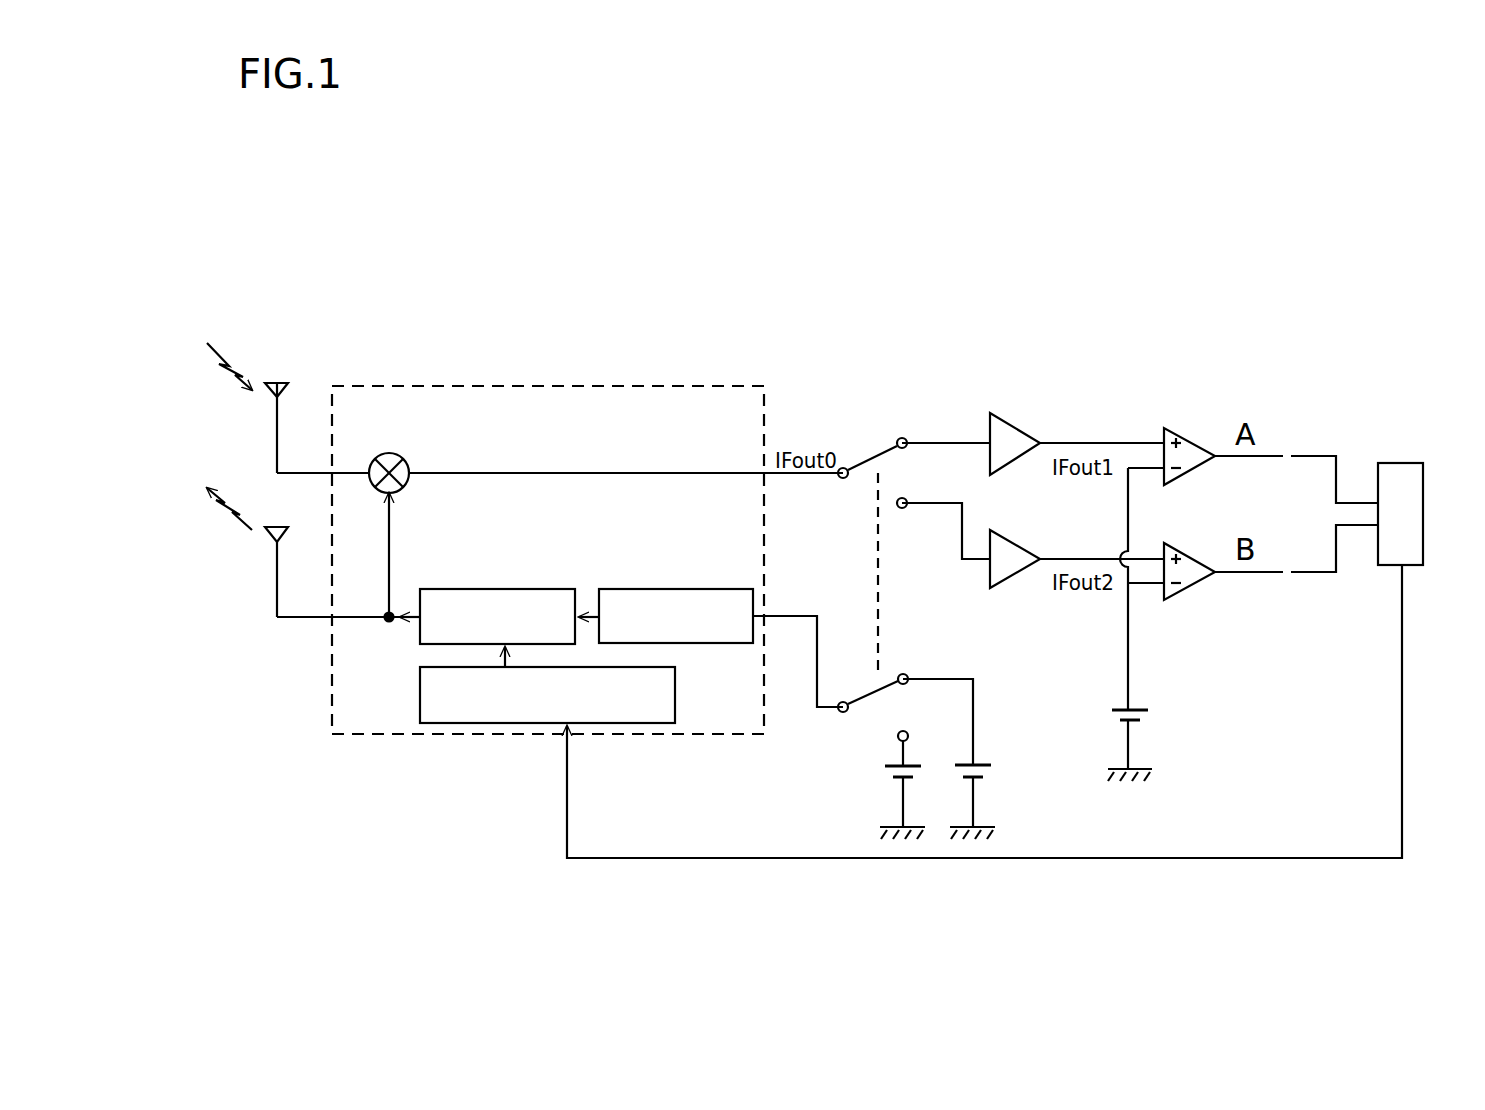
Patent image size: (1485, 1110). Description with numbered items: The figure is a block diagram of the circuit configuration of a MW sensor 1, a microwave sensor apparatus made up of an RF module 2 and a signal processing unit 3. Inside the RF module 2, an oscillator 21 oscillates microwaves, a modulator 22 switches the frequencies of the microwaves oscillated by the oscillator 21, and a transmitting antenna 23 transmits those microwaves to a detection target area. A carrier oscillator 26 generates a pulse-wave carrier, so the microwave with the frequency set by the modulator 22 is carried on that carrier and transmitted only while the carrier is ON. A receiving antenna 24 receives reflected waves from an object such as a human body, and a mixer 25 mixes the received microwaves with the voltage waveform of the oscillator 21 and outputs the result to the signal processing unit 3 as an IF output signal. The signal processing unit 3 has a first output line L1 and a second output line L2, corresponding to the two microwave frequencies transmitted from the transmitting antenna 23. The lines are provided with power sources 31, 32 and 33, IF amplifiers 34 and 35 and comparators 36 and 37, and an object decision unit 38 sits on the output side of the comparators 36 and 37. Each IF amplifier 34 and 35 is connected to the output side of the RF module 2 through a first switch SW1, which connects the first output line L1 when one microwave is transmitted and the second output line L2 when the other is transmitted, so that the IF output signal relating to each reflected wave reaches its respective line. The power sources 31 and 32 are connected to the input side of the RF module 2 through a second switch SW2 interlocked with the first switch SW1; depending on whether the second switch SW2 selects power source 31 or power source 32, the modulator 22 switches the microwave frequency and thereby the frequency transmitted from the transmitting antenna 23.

The MW sensor 1 is at (240, 198).
The RF module 2 is at (613, 382).
The signal processing unit 3 is at (948, 318).
The oscillator 21 is at (517, 589).
The modulator 22 is at (695, 589).
The transmitting antenna 23 is at (265, 535).
The receiving antenna 24 is at (283, 383).
The mixer 25 is at (405, 460).
The carrier oscillator 26 is at (420, 697).
The power source 31 is at (985, 758).
The power source 32 is at (892, 760).
The power source 33 is at (1140, 702).
The IF amplifier 34 is at (1012, 413).
The IF amplifier 35 is at (1015, 575).
The comparator 36 is at (1193, 428).
The comparator 37 is at (1190, 590).
The object decision unit 38 is at (1400, 463).
The first switch SW1 is at (843, 465).
The second switch SW2 is at (867, 700).
The first output line L1 is at (1100, 440).
The second output line L2 is at (1085, 557).